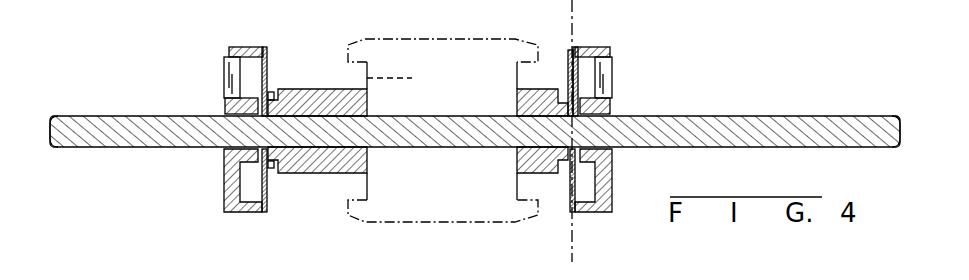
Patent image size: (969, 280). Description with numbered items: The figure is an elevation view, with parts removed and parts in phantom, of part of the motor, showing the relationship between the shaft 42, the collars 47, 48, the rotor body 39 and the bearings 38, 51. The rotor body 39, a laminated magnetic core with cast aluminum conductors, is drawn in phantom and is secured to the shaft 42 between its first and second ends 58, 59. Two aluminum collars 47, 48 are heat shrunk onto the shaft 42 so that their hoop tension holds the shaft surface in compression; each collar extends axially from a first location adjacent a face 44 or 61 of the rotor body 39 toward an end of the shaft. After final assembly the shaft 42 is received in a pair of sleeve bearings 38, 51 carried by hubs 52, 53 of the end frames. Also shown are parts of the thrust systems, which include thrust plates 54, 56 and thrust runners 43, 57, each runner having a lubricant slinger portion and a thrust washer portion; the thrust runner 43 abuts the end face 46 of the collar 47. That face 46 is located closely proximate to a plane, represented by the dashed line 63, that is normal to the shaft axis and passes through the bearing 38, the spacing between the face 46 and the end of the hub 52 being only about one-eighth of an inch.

The sleeve bearing 38 is at (612, 112).
The rotor body 39 is at (451, 10).
The shaft 42 is at (728, 117).
The thrust runner 43 is at (568, 90).
The face of rotor body 44 is at (518, 182).
The end face of collar 46 is at (555, 160).
The collar 47 is at (540, 90).
The collar 48 is at (353, 163).
The sleeve bearing 51 is at (226, 112).
The hub 52 is at (612, 52).
The hub 53 is at (226, 52).
The thrust plate 54 is at (568, 190).
The thrust plate 56 is at (268, 186).
The thrust runner 57 is at (272, 92).
The first end of shaft 58 is at (57, 116).
The second end of shaft 59 is at (886, 116).
The face of rotor body 61 is at (406, 80).
The dashed line 63 is at (573, 22).